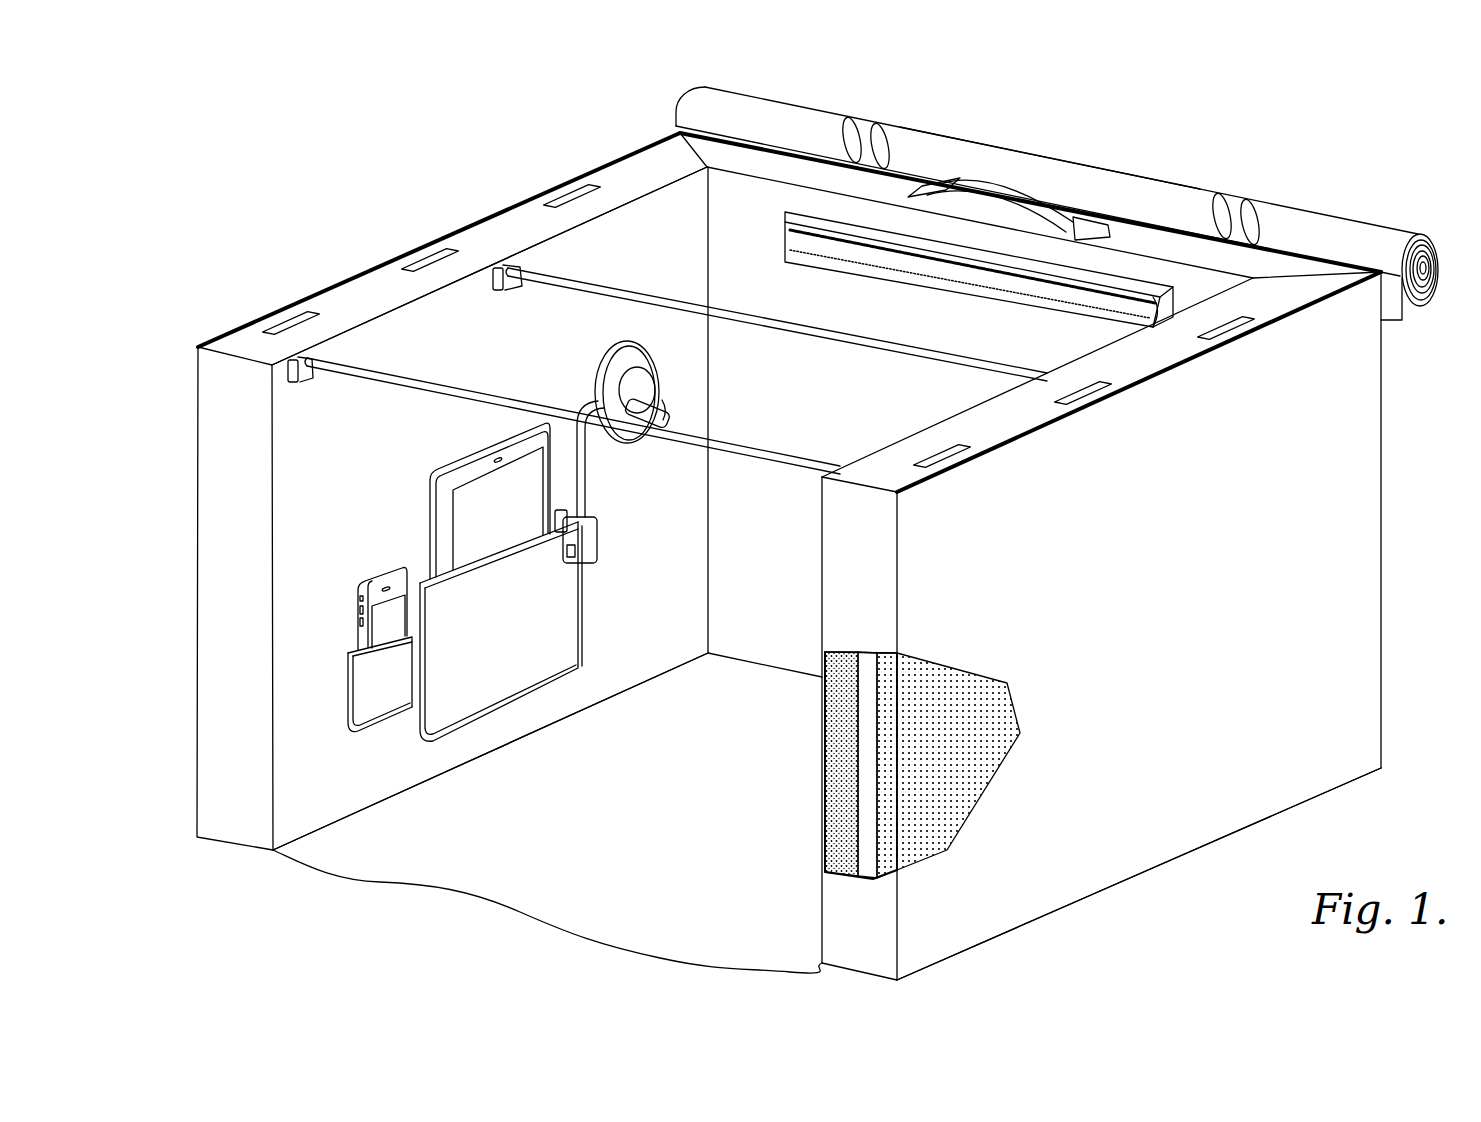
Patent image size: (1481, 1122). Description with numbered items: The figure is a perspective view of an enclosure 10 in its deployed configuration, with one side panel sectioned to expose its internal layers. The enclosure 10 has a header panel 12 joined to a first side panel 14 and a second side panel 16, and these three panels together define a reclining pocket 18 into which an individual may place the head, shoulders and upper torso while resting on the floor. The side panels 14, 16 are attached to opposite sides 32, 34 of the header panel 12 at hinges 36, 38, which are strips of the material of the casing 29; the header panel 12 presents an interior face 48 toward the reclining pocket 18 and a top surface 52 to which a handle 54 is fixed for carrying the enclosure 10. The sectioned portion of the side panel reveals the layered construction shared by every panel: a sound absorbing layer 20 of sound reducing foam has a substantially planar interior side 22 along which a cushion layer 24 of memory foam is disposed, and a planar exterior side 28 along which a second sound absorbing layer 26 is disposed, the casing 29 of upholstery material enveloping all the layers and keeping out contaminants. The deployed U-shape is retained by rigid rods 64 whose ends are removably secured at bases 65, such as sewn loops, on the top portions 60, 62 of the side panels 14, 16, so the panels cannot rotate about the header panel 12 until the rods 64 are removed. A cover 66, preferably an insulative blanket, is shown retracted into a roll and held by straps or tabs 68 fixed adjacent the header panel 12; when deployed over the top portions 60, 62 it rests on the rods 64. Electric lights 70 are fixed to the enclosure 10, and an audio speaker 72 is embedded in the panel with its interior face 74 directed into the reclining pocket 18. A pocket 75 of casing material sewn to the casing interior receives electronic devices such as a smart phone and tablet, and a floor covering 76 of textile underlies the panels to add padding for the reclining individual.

The enclosure 10 is at (345, 130).
The header panel 12 is at (768, 158).
The first side panel 14 is at (185, 480).
The second side panel 16 is at (1163, 872).
The reclining pocket 18 is at (468, 312).
The sound absorbing layer 20 is at (870, 858).
The interior side 22 is at (860, 803).
The cushion layer 24 is at (840, 735).
The second sound absorbing layer 26 is at (890, 840).
The exterior side 28 is at (880, 793).
The casing 29 is at (1073, 883).
The side of header panel 32 is at (727, 150).
The opposite side of header panel 34 is at (1318, 263).
The hinge 36 is at (707, 233).
The hinge 38 is at (1382, 480).
The interior face 48 is at (762, 640).
The surface 52 is at (878, 185).
The handle 54 is at (1033, 200).
The top portion 60 is at (215, 375).
The top portion 62 is at (833, 507).
The rigid rod 64 is at (570, 275).
The base 65 is at (505, 270).
The cover 66 is at (970, 158).
The strap or tab 68 is at (1240, 195).
The electric light 70 is at (818, 245).
The audio speaker 72 is at (600, 363).
The interior face of speaker 74 is at (660, 373).
The pocket 75 is at (380, 710).
The floor covering 76 is at (422, 858).